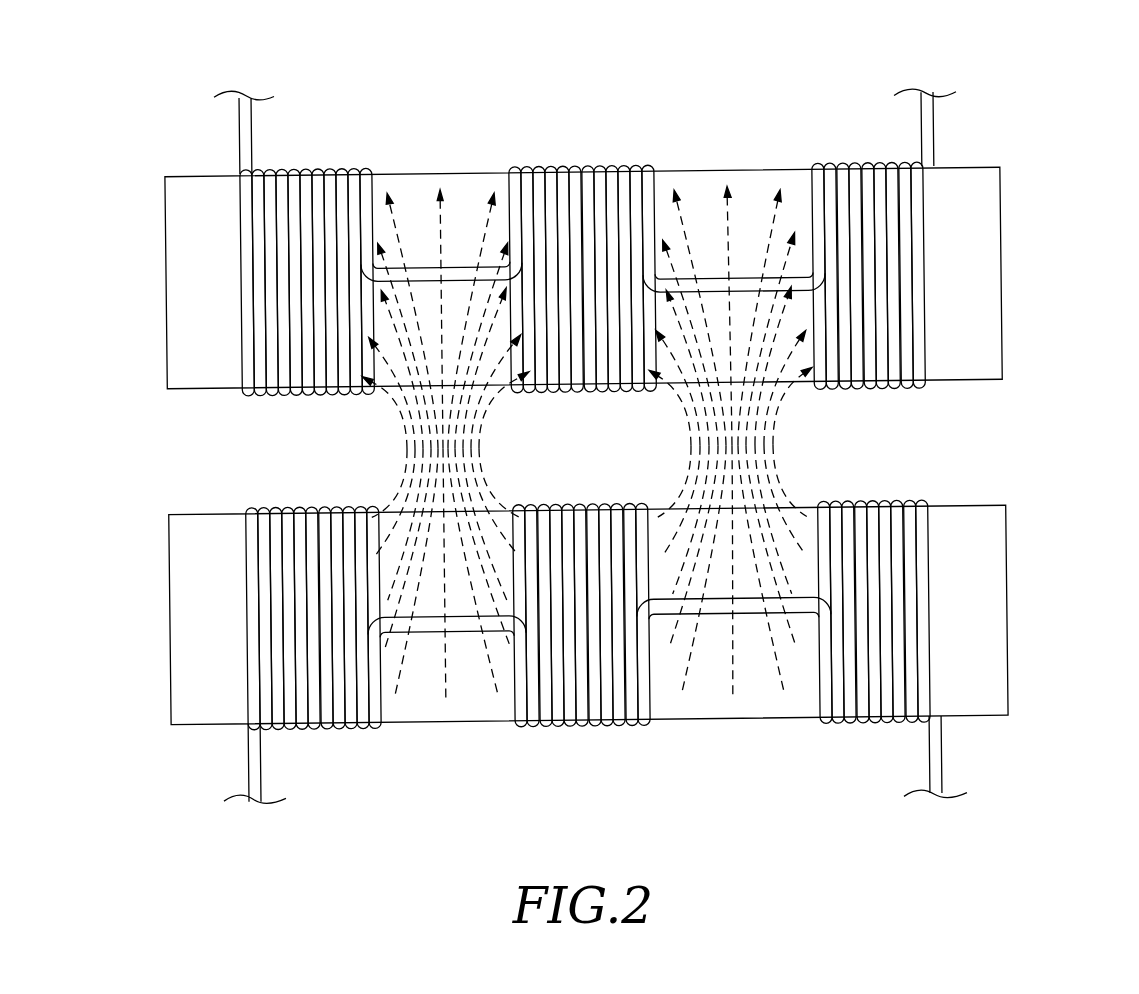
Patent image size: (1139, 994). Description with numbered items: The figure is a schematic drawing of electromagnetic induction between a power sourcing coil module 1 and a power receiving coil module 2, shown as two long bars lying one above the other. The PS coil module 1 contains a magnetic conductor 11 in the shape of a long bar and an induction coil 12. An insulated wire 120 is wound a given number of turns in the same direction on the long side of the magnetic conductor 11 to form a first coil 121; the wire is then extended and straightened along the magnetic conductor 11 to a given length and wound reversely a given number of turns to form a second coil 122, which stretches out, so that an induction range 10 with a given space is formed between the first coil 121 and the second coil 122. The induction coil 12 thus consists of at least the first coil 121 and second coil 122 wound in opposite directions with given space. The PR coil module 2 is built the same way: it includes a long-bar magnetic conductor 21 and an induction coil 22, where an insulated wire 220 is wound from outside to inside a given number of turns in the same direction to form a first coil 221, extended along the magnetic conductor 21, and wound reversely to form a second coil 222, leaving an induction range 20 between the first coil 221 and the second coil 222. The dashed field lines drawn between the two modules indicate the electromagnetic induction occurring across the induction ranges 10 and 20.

The power sourcing coil module 1 is at (627, 687).
The induction range 10 is at (742, 640).
The magnetic conductor 11 is at (983, 600).
The induction coil 12 is at (547, 688).
The insulated wire 120 is at (213, 770).
The first coil 121 is at (347, 690).
The second coil 122 is at (580, 686).
The power receiving coil module 2 is at (618, 213).
The induction range 20 is at (713, 228).
The magnetic conductor 21 is at (980, 268).
The induction coil 22 is at (535, 204).
The insulated wire 220 is at (200, 126).
The first coil 221 is at (297, 178).
The second coil 222 is at (553, 175).